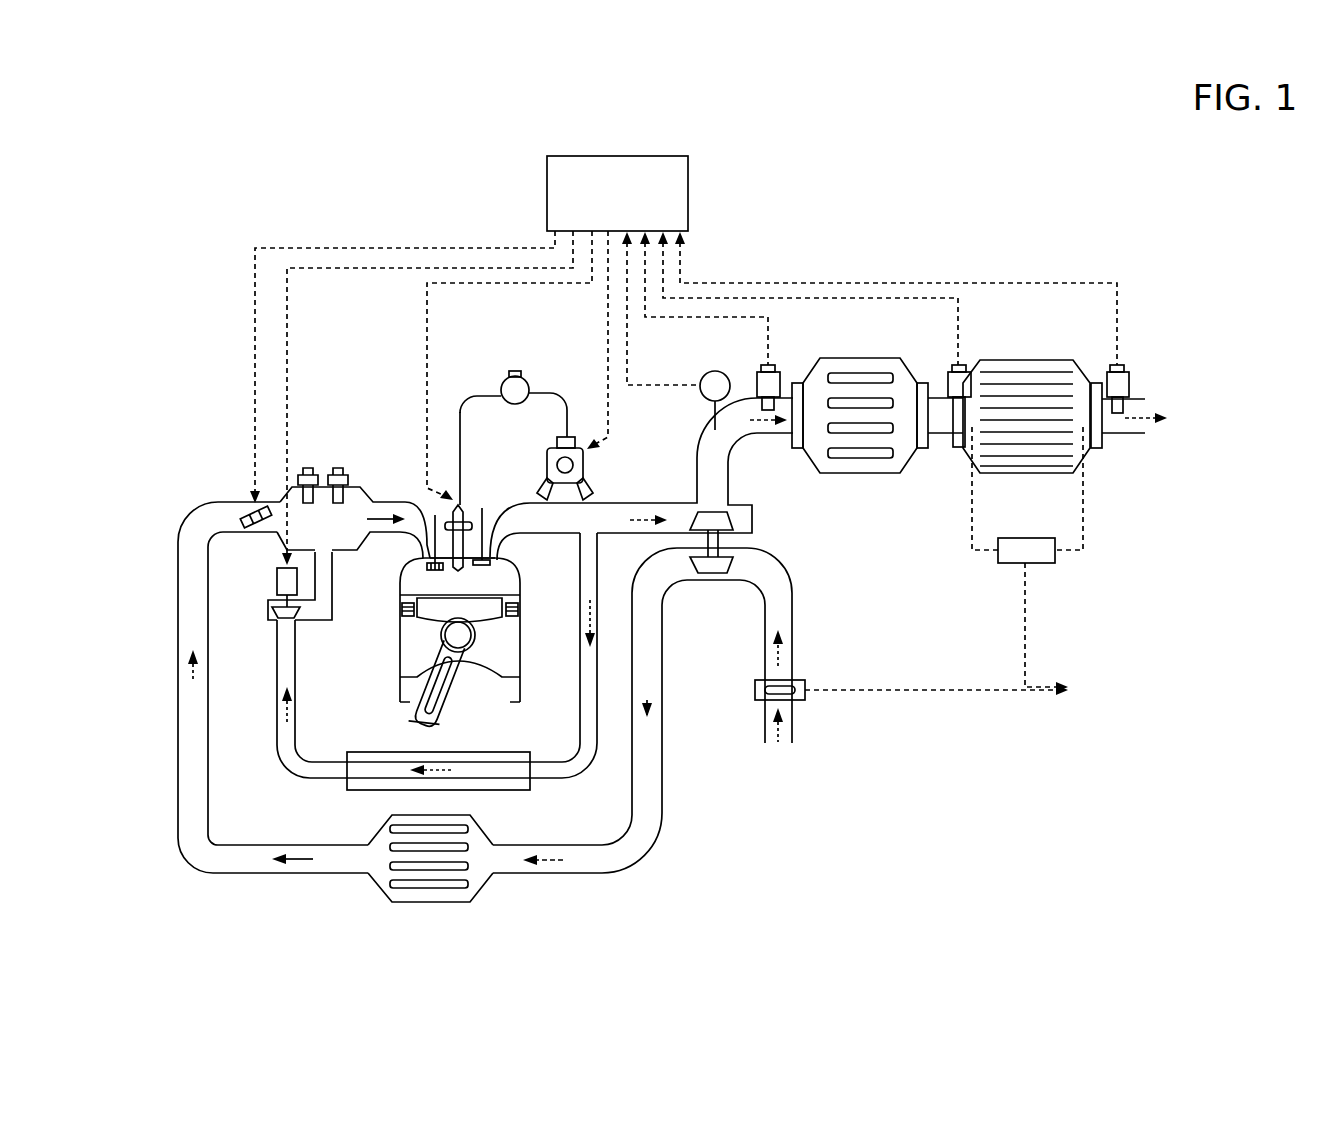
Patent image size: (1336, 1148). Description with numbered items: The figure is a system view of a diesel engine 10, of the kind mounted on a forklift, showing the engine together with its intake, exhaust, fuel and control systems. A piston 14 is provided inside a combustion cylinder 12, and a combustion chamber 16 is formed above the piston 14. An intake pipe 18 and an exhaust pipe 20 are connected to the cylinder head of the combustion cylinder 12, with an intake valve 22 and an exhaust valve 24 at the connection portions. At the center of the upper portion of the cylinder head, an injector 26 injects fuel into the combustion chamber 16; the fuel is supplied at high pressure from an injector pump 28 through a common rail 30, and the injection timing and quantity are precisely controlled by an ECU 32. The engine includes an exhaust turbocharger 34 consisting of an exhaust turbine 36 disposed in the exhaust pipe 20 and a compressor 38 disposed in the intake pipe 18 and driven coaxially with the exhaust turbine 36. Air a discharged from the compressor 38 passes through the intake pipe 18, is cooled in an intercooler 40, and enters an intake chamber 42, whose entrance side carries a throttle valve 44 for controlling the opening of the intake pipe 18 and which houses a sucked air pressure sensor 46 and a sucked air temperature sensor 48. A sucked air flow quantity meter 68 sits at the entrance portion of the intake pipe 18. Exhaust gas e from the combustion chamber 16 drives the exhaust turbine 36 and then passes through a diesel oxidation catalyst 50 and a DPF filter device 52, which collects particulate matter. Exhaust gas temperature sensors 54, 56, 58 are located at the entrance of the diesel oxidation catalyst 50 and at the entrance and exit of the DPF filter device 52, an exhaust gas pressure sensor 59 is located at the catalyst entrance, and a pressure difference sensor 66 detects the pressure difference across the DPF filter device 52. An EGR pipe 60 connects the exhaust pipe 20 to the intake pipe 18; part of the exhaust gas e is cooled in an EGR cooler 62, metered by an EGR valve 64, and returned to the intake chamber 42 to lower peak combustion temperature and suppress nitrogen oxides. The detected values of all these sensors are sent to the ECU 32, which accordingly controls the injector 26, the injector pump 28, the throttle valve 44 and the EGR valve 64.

The diesel engine 10 is at (370, 229).
The combustion cylinder 12 is at (420, 560).
The piston 14 is at (505, 640).
The combustion chamber 16 is at (500, 580).
The intake pipe 18 is at (178, 746).
The exhaust pipe 20 is at (708, 428).
The intake valve 22 is at (432, 535).
The exhaust valve 24 is at (482, 517).
The injector 26 is at (432, 502).
The injector pump 28 is at (545, 462).
The common rail 30 is at (518, 380).
The ECU 32 is at (690, 184).
The exhaust turbocharger 34 is at (723, 544).
The exhaust turbine 36 is at (713, 512).
The compressor 38 is at (710, 575).
The intercooler 40 is at (450, 902).
The intake chamber 42 is at (366, 490).
The throttle valve 44 is at (245, 517).
The sucked air pressure sensor 46 is at (307, 460).
The sucked air temperature sensor 48 is at (335, 468).
The diesel oxidation catalyst 50 is at (848, 473).
The DPF filter device 52 is at (1025, 473).
The exhaust gas temperature sensor 54 is at (762, 372).
The exhaust gas temperature sensor 56 is at (958, 370).
The exhaust gas temperature sensor 58 is at (1118, 370).
The exhaust gas pressure sensor 59 is at (703, 377).
The EGR pipe 60 is at (585, 763).
The EGR cooler 62 is at (347, 785).
The EGR valve 64 is at (277, 578).
The pressure difference sensor 66 is at (1045, 563).
The sucked air flow quantity meter 68 is at (805, 698).
The air a is at (780, 745).
The exhaust gas e is at (604, 550).